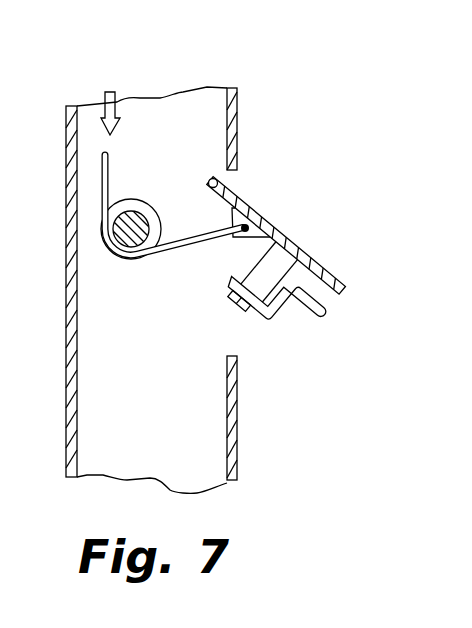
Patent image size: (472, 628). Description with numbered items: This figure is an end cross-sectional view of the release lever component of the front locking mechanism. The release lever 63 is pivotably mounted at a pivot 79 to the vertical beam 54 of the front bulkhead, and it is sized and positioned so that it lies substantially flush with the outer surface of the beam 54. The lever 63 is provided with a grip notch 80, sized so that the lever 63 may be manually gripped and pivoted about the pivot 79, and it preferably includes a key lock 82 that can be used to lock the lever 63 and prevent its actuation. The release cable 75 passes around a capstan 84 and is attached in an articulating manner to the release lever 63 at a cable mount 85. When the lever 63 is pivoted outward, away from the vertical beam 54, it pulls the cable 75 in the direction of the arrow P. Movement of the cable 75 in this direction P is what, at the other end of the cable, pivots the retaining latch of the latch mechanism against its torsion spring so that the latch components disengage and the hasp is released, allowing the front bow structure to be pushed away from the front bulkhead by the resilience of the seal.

The vertical beam 54 is at (233, 127).
The release cable 75 is at (100, 184).
The capstan 84 is at (133, 211).
The pivot 79 is at (218, 183).
The release lever 63 is at (278, 224).
The cable mount 85 is at (242, 231).
The grip notch 80 is at (338, 281).
The key lock 82 is at (291, 307).
The direction of cable pull P is at (103, 100).